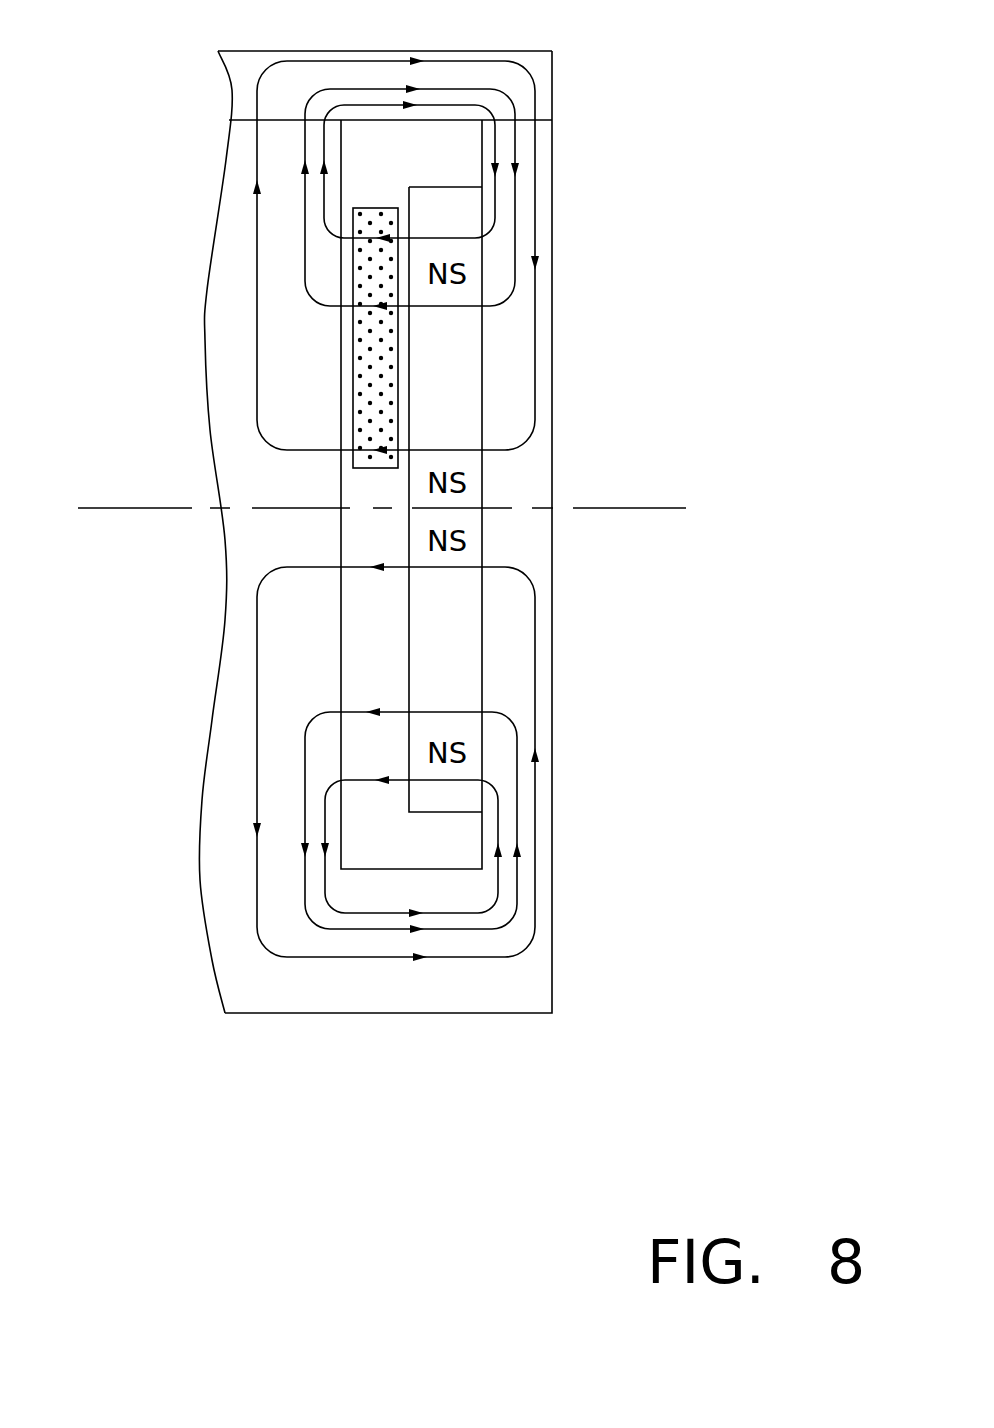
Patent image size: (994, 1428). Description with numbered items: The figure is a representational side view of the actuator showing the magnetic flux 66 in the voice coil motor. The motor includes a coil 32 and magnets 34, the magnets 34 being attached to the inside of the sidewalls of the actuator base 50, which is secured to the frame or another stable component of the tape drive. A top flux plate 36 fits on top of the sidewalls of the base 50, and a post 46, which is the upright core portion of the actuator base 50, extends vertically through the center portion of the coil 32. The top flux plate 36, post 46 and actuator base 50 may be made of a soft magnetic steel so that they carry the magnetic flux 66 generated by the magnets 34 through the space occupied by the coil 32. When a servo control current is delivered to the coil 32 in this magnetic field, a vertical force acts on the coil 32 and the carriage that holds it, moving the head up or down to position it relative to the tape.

The coil 32 is at (360, 396).
The magnets 34 is at (457, 363).
The top flux plate 36 is at (547, 84).
The post 46 is at (218, 316).
The actuator base 50 is at (548, 230).
The magnetic flux 66 is at (357, 105).